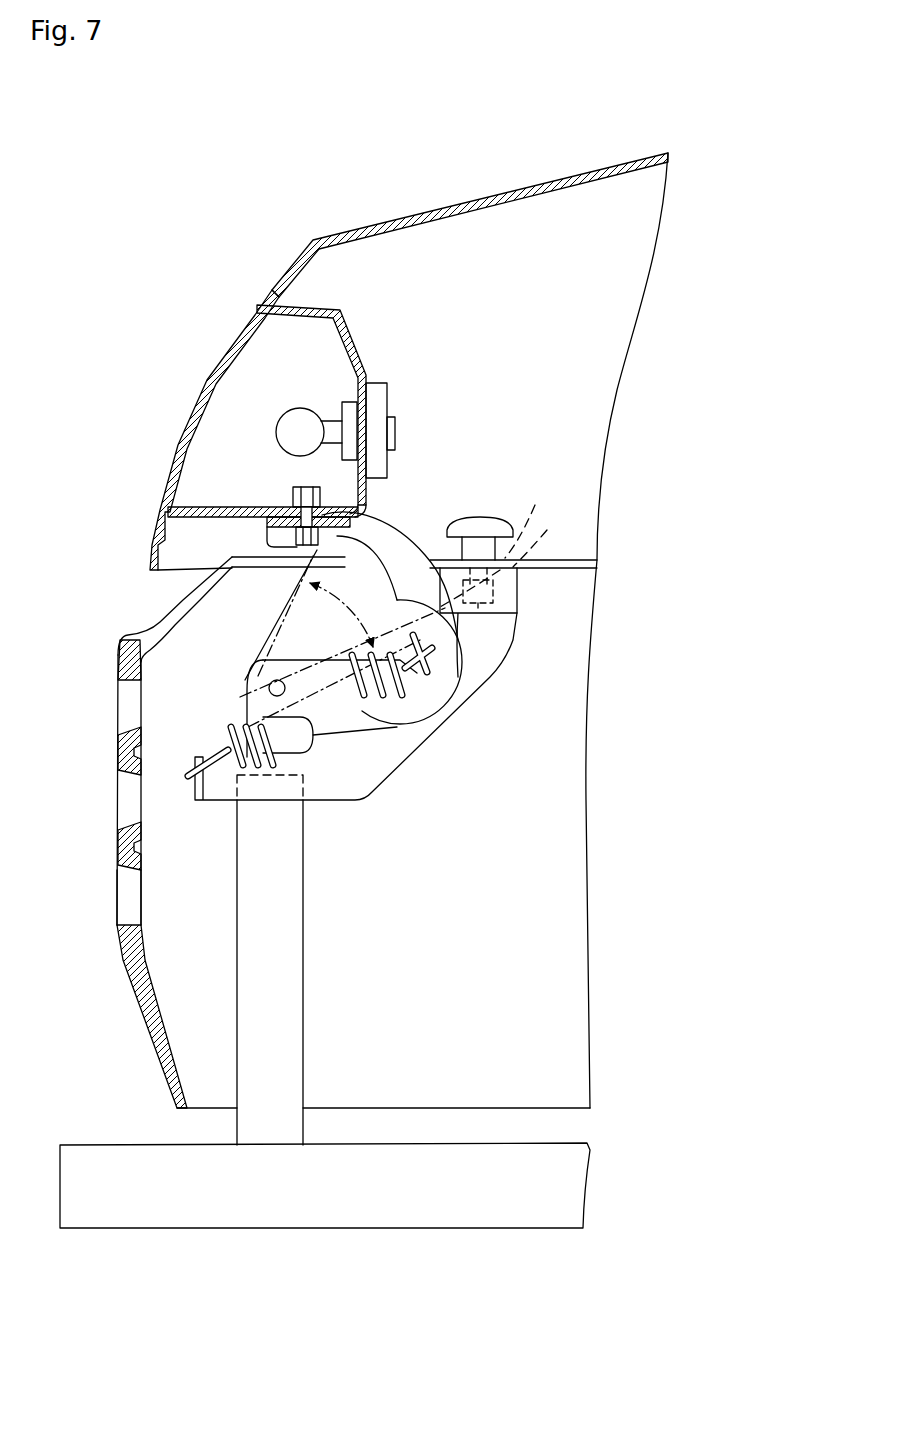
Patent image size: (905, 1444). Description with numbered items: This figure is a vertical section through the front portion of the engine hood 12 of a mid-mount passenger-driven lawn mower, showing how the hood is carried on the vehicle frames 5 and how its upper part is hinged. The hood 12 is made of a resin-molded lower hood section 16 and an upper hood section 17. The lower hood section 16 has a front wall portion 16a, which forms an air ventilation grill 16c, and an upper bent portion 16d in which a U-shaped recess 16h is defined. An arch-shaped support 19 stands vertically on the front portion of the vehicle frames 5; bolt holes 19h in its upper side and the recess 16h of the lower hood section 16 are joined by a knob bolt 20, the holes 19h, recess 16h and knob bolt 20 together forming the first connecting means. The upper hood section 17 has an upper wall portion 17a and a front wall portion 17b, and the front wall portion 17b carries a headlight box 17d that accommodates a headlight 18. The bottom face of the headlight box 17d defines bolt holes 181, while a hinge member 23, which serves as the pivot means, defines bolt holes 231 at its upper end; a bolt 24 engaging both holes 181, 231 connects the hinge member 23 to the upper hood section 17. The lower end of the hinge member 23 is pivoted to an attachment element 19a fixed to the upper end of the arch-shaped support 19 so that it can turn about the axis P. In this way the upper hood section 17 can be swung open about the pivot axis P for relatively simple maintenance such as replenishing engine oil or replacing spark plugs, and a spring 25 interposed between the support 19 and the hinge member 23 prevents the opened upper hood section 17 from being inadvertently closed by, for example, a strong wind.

The vehicle frames 5 is at (443, 1225).
The hood 12 is at (519, 178).
The lower hood section 16 is at (319, 832).
The front wall portion 16a is at (140, 1012).
The air ventilation grill 16c is at (128, 888).
The horizontal wall of bracket 16d is at (541, 570).
The U-shaped recesses 16h is at (511, 541).
The upper hood section 17 is at (409, 356).
The upper wall portion 17a is at (434, 200).
The front wall portion 17b is at (275, 275).
The headlight box 17d is at (363, 316).
The headlights 18 is at (297, 410).
The bolt holes 181 is at (370, 510).
The arch-shaped support 19 is at (303, 935).
The attachment elements 19a is at (397, 762).
The bolt holes 19h is at (552, 541).
The knob bolts 20 is at (483, 520).
The hinge members 23 is at (453, 657).
The bolt holes 231 is at (290, 542).
The bolts 24 is at (293, 490).
The springs 25 is at (420, 715).
The pivot axis P is at (281, 680).